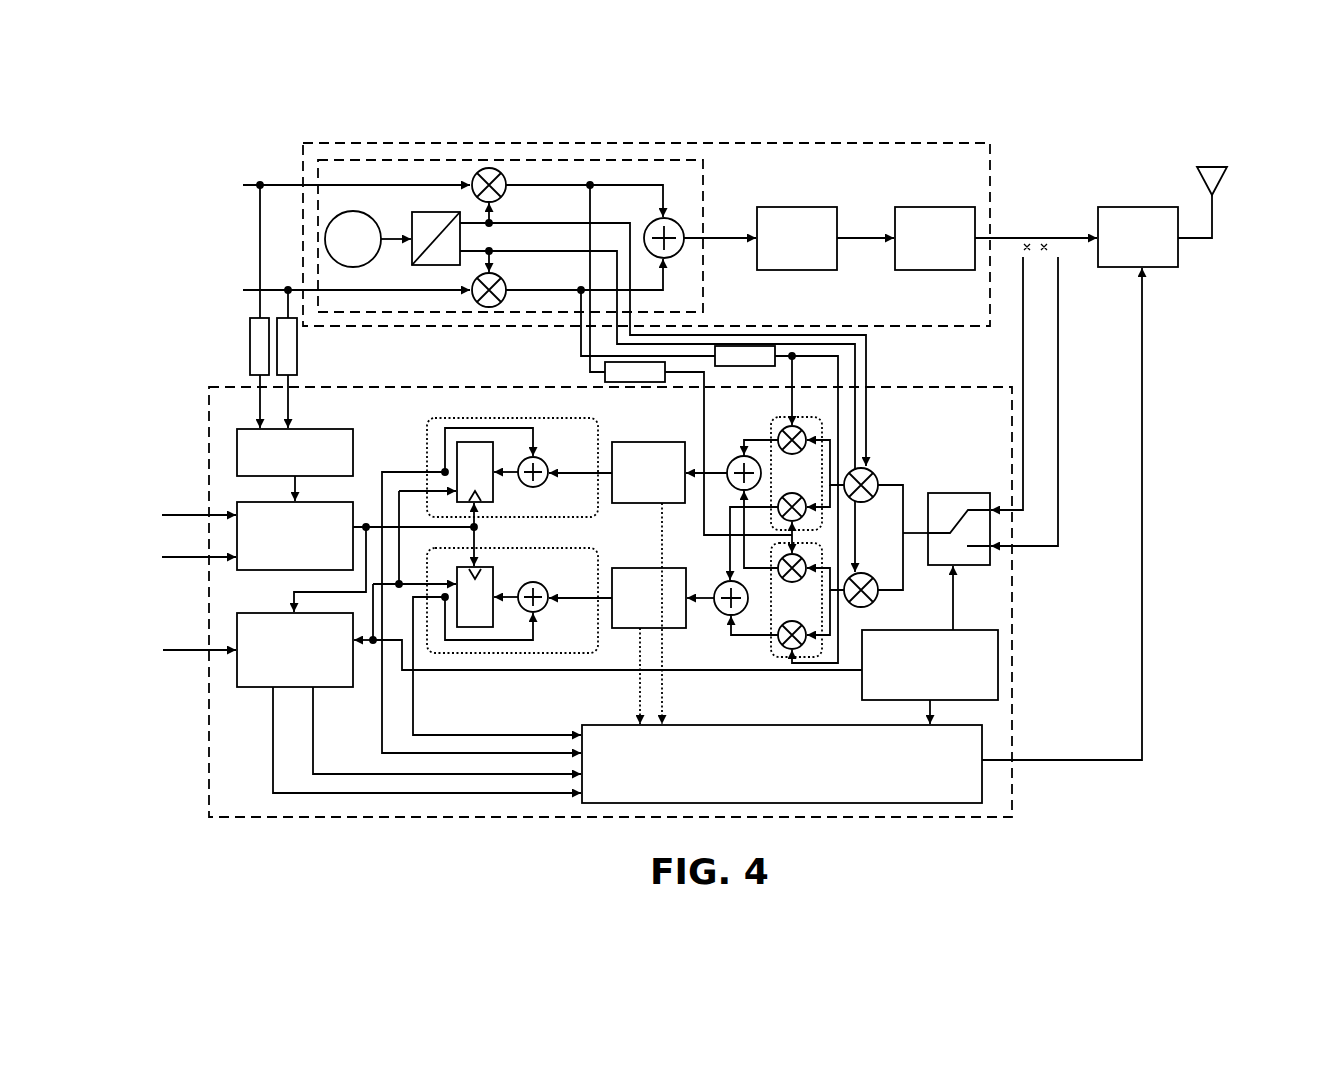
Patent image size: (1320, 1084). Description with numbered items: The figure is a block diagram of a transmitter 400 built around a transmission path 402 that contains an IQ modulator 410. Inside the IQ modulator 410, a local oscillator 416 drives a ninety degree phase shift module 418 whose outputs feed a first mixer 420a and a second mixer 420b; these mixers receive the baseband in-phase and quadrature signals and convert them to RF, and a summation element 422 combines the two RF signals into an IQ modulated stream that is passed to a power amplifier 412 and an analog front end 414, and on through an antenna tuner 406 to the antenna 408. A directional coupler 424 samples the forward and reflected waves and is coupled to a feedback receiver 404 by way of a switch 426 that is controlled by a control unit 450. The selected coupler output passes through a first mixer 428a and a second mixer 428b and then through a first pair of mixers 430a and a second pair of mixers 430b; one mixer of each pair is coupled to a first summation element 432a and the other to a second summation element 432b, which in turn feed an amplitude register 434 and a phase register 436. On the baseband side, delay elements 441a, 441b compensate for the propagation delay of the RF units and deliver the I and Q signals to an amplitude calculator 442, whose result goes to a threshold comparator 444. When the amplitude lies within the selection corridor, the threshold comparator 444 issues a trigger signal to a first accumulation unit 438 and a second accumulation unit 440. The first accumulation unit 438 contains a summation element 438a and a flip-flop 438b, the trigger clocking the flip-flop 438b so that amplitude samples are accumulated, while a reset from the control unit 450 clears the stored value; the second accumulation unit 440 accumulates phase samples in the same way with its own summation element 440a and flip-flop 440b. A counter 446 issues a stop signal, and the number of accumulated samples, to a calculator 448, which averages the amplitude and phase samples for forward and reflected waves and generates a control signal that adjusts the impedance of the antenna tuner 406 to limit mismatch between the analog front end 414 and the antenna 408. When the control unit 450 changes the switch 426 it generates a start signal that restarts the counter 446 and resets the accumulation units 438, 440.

The transmitter 400 is at (236, 130).
The transmission path 402 is at (975, 143).
The feedback receiver 404 is at (209, 400).
The antenna tuner 406 is at (1138, 207).
The antenna 408 is at (1214, 167).
The IQ modulator 410 is at (703, 175).
The power amplifier 412 is at (810, 207).
The analog front end 414 is at (930, 207).
The local oscillator 416 is at (363, 213).
The 90° phase shift module 418 is at (416, 265).
The first mixer 420a is at (502, 192).
The second mixer 420b is at (502, 282).
The summation element 422 is at (650, 222).
The directional coupler 424 is at (1044, 217).
The switch 426 is at (955, 493).
The first mixer 428a is at (874, 472).
The second mixer 428b is at (873, 603).
The first pair of mixers 430a is at (782, 418).
The second pair of mixers 430b is at (776, 652).
The first summation element 432a is at (737, 458).
The second summation element 432b is at (724, 582).
The amplitude register 434 is at (655, 442).
The phase register 436 is at (655, 568).
The first accumulation unit 438 is at (565, 418).
The summation element 438a is at (544, 460).
The flip-flop 438b is at (493, 500).
The second accumulation unit 440 is at (565, 548).
The summation element 440a is at (544, 609).
The flip-flop 440b is at (493, 571).
The delay element 441a is at (250, 346).
The delay element 441b is at (297, 343).
The amplitude calculator 442 is at (330, 429).
The threshold comparator 444 is at (330, 502).
The counter 446 is at (265, 613).
The calculator 448 is at (767, 787).
The control unit 450 is at (915, 686).